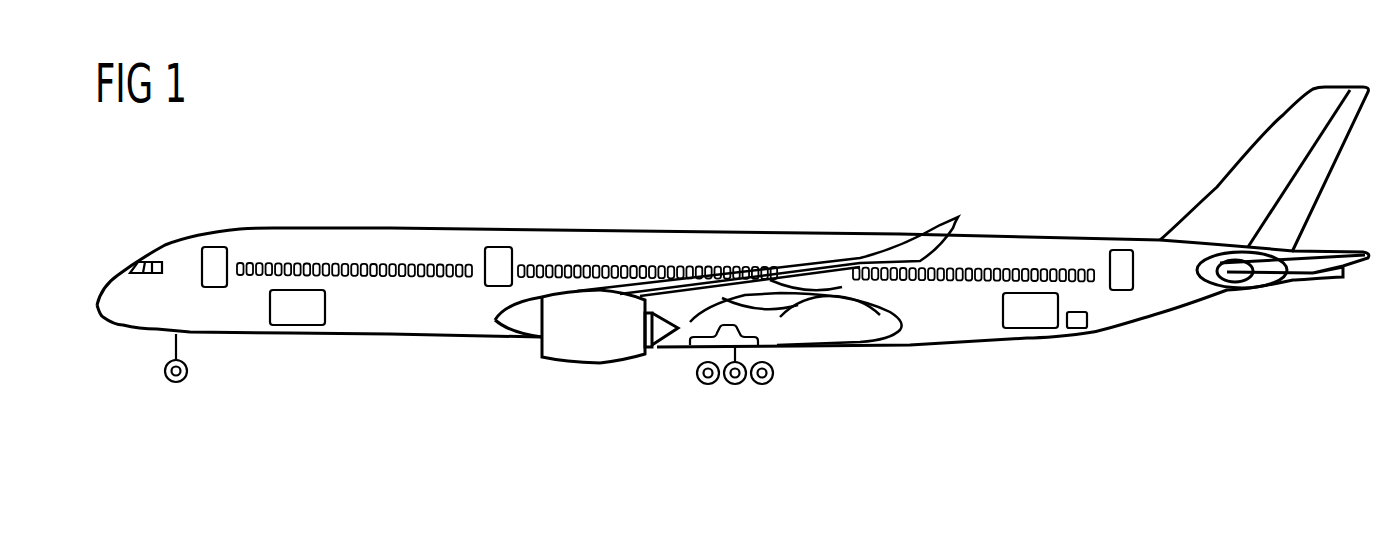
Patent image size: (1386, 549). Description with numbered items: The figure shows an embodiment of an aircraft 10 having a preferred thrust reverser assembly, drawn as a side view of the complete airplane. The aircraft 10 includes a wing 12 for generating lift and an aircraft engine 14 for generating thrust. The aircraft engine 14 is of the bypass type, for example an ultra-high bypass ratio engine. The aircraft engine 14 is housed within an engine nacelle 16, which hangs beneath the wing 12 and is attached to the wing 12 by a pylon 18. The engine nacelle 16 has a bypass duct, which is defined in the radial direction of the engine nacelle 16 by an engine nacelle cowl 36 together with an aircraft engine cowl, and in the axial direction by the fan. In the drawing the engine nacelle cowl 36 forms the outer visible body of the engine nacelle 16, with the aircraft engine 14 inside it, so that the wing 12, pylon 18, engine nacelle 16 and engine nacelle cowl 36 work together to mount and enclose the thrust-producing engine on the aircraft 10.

The aircraft 10 is at (293, 178).
The wing 12 is at (707, 250).
The aircraft engine 14 is at (540, 386).
The engine nacelle 16 is at (590, 350).
The pylon 18 is at (658, 300).
The engine nacelle cowl 36 is at (628, 350).